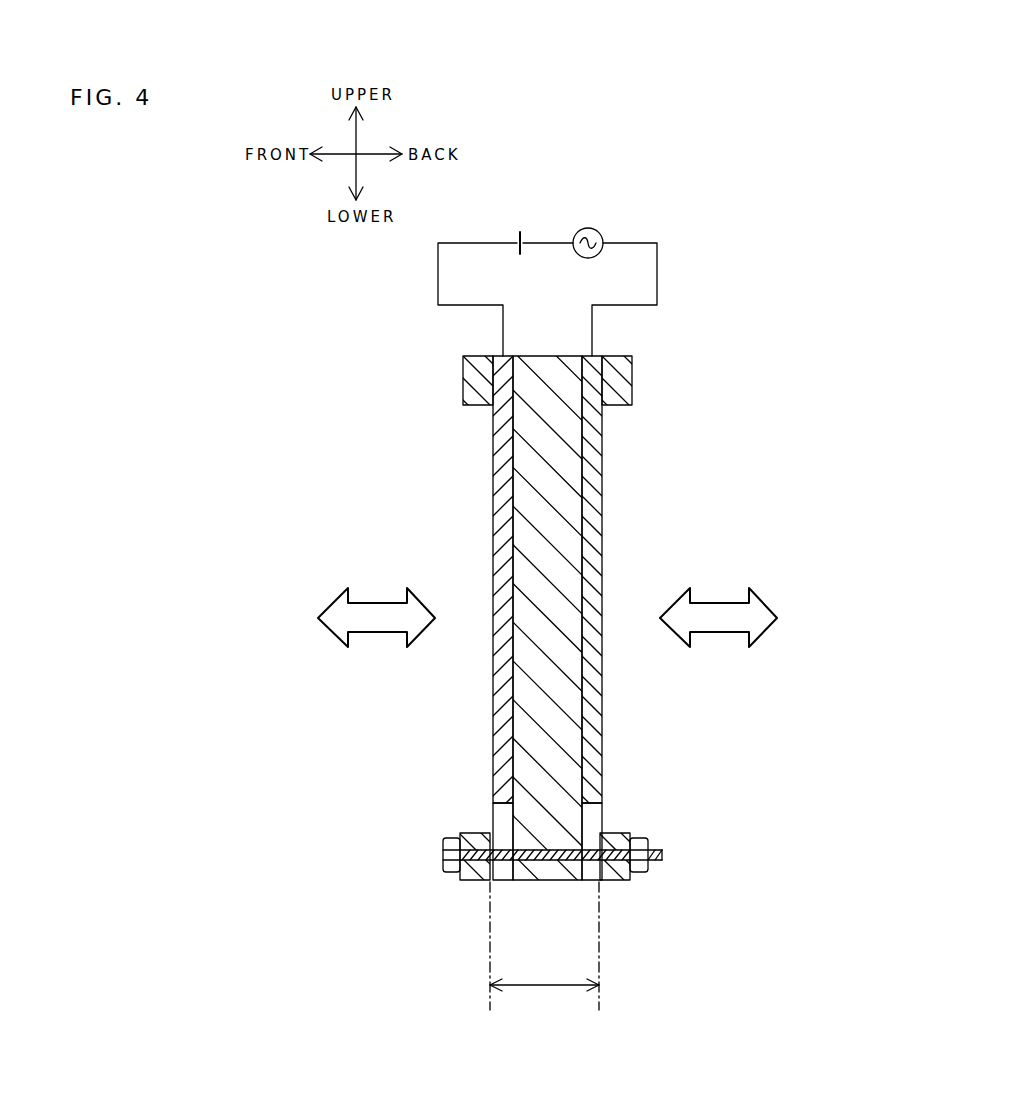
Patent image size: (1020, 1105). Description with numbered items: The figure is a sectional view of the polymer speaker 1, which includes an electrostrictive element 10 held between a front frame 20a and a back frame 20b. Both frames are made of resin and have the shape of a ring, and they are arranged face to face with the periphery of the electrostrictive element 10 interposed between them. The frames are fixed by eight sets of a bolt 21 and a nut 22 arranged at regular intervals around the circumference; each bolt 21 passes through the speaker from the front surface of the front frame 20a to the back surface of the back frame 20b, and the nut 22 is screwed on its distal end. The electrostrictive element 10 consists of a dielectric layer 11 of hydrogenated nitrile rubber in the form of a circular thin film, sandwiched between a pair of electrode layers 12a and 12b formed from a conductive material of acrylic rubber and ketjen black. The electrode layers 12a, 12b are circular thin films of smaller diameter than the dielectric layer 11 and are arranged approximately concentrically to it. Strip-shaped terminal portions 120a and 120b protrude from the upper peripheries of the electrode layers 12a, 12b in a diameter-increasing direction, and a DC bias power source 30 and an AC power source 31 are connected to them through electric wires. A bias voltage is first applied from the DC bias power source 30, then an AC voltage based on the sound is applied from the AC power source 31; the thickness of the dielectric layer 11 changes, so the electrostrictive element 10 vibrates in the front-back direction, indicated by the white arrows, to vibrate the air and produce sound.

The polymer speaker 1 is at (740, 323).
The electrostrictive element 10 is at (545, 985).
The dielectric layer 11 is at (530, 438).
The electrode layer 12a is at (500, 507).
The electrode layer 12b is at (590, 505).
The terminal portion 120a is at (495, 358).
The terminal portion 120b is at (602, 358).
The front frame 20a is at (473, 875).
The back frame 20b is at (615, 875).
The bolt 21 is at (455, 842).
The nut 22 is at (638, 842).
The DC bias power source 30 is at (523, 233).
The AC power source 31 is at (600, 233).